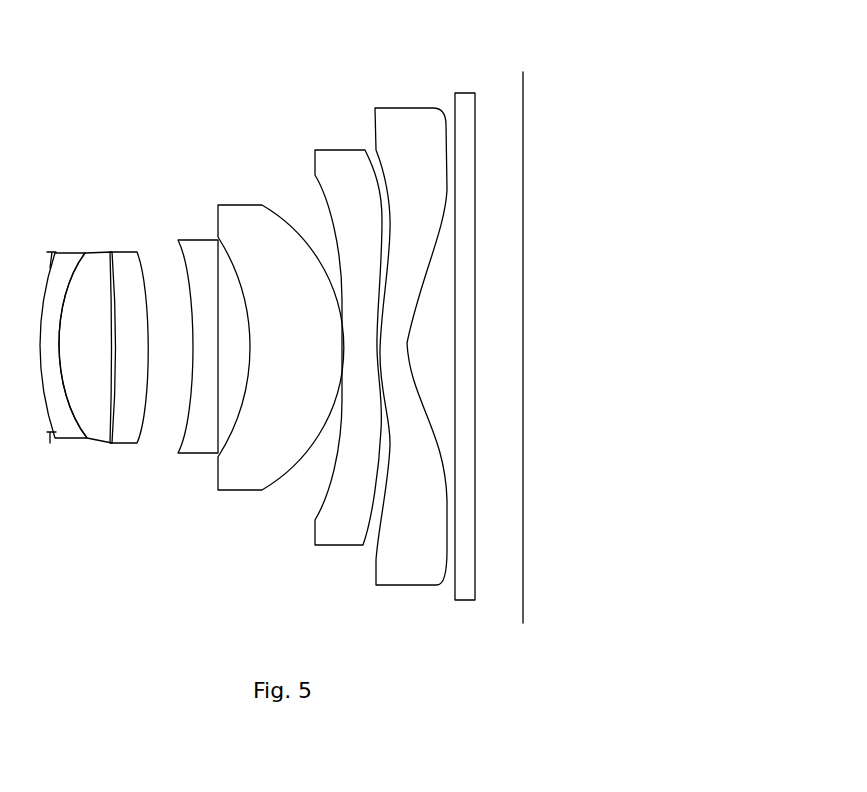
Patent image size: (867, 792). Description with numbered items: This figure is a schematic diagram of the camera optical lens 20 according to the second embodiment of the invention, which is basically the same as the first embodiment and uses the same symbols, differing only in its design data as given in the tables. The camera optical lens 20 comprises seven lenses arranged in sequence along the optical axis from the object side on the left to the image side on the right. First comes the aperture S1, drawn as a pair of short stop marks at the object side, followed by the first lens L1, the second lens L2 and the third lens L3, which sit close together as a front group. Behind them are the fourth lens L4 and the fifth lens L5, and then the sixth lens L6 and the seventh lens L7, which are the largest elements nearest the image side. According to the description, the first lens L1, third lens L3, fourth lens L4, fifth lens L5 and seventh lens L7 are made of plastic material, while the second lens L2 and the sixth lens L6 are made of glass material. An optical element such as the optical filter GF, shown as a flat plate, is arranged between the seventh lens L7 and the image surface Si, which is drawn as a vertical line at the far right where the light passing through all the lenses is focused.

The camera optical lens 20 is at (296, 42).
The aperture S1 is at (48, 339).
The first lens L1 is at (63, 338).
The second lens L2 is at (87, 337).
The third lens L3 is at (129, 336).
The fourth lens L4 is at (198, 338).
The fifth lens L5 is at (281, 337).
The sixth lens L6 is at (348, 338).
The seventh lens L7 is at (411, 337).
The optical filter GF is at (465, 333).
The image surface Si is at (519, 339).